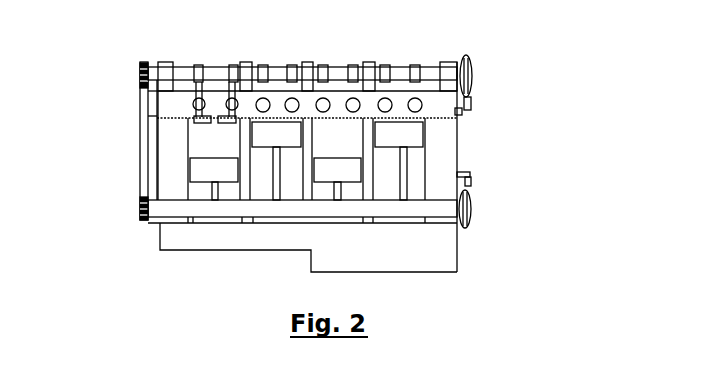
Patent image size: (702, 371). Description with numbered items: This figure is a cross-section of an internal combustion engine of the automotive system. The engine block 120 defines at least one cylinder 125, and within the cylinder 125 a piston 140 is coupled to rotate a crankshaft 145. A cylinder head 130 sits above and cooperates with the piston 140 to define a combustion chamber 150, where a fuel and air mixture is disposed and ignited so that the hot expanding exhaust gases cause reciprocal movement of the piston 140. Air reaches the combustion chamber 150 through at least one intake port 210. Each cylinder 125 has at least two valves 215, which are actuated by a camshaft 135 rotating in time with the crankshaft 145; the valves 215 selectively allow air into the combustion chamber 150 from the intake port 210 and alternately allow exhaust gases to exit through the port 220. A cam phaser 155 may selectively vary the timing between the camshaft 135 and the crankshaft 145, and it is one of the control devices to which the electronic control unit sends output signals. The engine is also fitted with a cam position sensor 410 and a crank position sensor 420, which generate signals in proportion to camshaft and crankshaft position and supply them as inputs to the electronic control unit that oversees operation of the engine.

The engine block 120 is at (158, 160).
The cylinder 125 is at (312, 145).
The cylinder head 130 is at (143, 116).
The camshaft 135 is at (204, 65).
The piston 140 is at (342, 170).
The crankshaft 145 is at (185, 210).
The combustion chamber 150 is at (410, 122).
The cam phaser 155 is at (140, 70).
The intake port 210 is at (332, 90).
The valves 215 is at (198, 119).
The port 220 is at (280, 94).
The cam position sensor 410 is at (471, 107).
The crank position sensor 420 is at (471, 175).